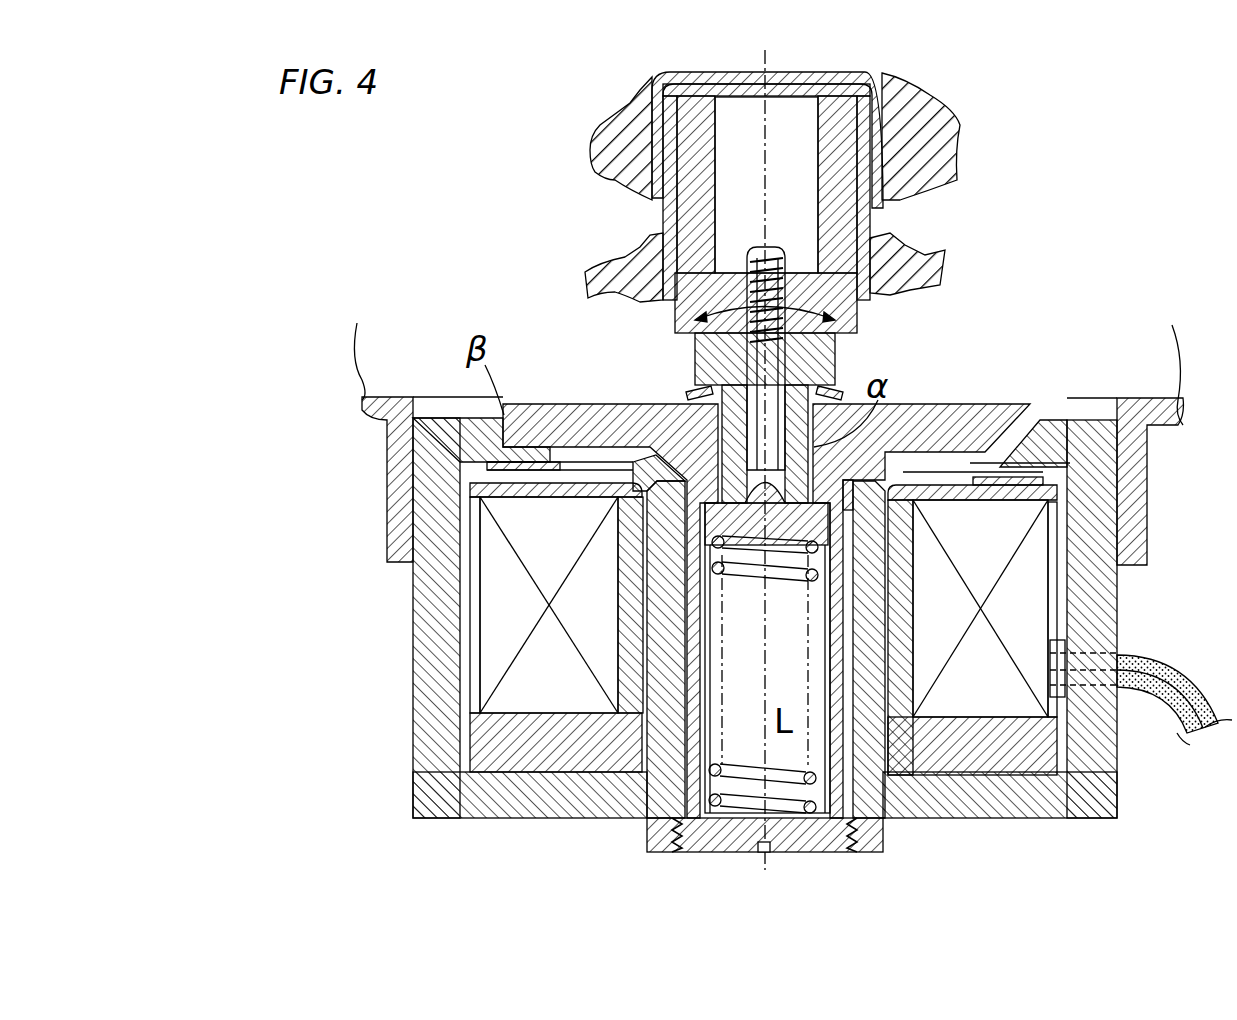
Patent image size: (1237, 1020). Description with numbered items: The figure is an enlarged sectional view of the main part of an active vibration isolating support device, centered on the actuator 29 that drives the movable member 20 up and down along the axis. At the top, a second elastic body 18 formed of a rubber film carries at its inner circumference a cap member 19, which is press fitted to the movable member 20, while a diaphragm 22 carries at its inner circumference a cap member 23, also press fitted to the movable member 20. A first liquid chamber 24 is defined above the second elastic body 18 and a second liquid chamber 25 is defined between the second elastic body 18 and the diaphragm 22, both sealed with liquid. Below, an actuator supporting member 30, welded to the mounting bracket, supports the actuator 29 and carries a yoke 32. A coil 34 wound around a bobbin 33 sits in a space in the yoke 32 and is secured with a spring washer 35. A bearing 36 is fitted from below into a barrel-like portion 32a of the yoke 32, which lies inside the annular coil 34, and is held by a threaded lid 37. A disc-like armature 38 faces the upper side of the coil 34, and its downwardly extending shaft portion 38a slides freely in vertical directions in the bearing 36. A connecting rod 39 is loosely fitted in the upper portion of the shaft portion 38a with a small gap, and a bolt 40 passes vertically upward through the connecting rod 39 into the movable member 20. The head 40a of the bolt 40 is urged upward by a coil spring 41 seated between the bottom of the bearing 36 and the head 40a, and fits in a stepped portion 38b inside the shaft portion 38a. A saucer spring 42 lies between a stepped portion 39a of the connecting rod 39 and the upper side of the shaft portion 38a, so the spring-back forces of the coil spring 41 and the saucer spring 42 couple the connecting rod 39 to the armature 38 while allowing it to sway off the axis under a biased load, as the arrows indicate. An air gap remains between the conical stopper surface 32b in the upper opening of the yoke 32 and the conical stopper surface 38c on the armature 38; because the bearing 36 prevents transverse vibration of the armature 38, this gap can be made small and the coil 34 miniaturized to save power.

The second elastic body 18 is at (918, 142).
The cap member 19 is at (796, 88).
The movable member 20 is at (825, 235).
The diaphragm 22 is at (900, 268).
The cap member 23 is at (655, 285).
The first liquid chamber 24 is at (622, 102).
The second liquid chamber 25 is at (630, 242).
The actuator 29 is at (336, 668).
The actuator supporting member 30 is at (387, 482).
The yoke 32 is at (408, 776).
The barrel-like portion 32a is at (882, 670).
The conical stopper surface 32b is at (1030, 417).
The bobbin 33 is at (533, 735).
The coil 34 is at (482, 605).
The spring washer 35 is at (540, 492).
The bearing 36 is at (672, 816).
The threaded lid 37 is at (860, 832).
The armature 38 is at (594, 398).
The shaft portion 38a is at (845, 582).
The stepped portion 38b is at (718, 500).
The conical stopper surface 38c is at (1000, 430).
The connecting rod 39 is at (842, 346).
The stepped portion 39a is at (689, 393).
The bolt 40 is at (760, 240).
The head 40a is at (788, 712).
The coil spring 41 is at (717, 766).
The saucer spring 42 is at (842, 356).